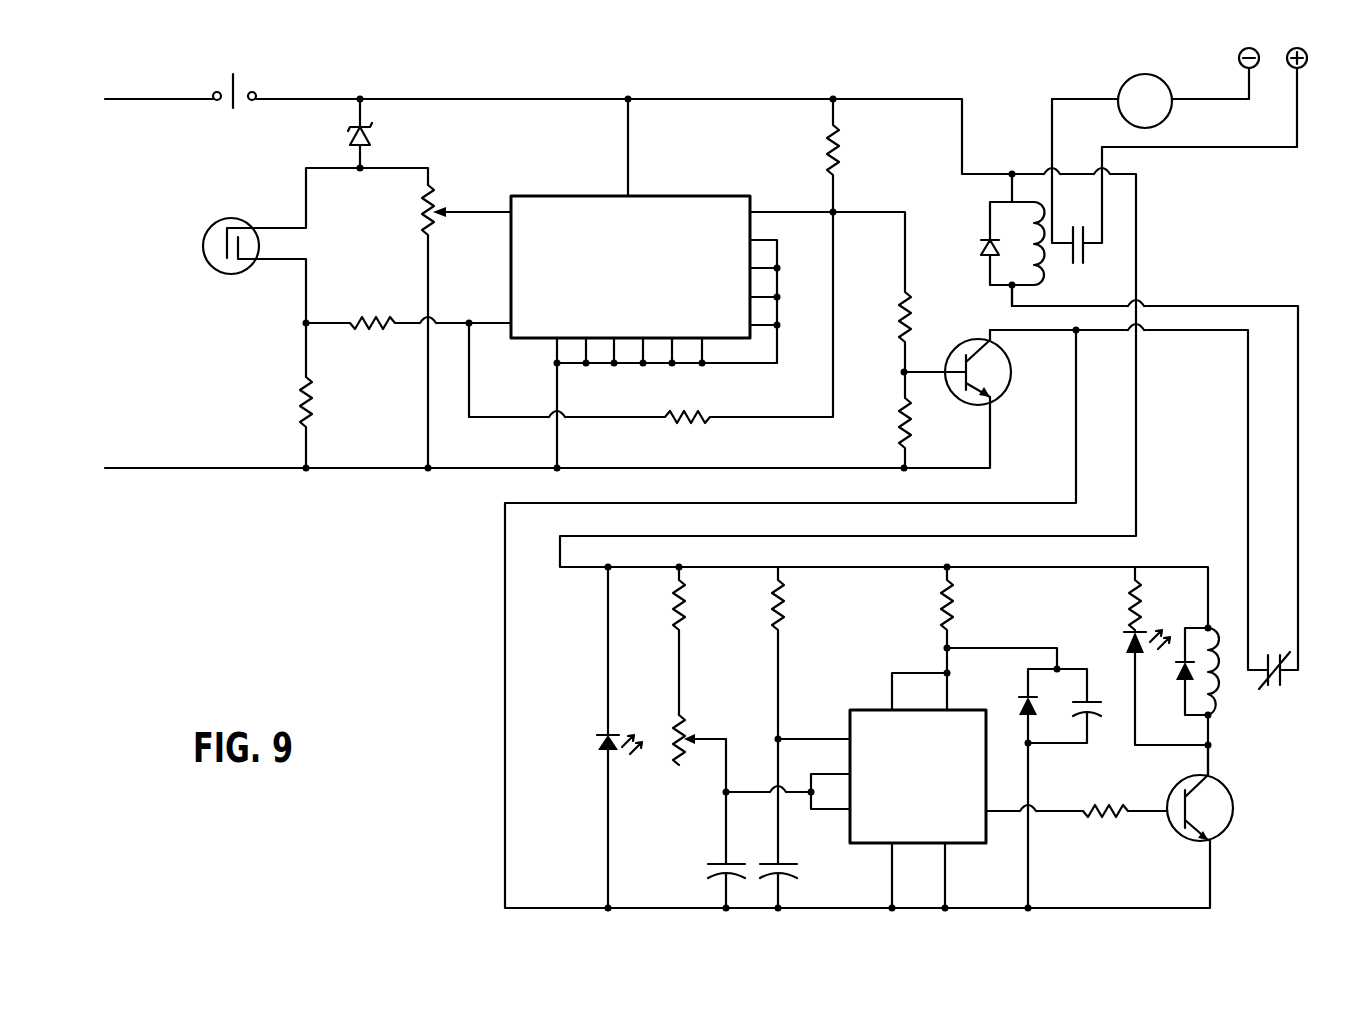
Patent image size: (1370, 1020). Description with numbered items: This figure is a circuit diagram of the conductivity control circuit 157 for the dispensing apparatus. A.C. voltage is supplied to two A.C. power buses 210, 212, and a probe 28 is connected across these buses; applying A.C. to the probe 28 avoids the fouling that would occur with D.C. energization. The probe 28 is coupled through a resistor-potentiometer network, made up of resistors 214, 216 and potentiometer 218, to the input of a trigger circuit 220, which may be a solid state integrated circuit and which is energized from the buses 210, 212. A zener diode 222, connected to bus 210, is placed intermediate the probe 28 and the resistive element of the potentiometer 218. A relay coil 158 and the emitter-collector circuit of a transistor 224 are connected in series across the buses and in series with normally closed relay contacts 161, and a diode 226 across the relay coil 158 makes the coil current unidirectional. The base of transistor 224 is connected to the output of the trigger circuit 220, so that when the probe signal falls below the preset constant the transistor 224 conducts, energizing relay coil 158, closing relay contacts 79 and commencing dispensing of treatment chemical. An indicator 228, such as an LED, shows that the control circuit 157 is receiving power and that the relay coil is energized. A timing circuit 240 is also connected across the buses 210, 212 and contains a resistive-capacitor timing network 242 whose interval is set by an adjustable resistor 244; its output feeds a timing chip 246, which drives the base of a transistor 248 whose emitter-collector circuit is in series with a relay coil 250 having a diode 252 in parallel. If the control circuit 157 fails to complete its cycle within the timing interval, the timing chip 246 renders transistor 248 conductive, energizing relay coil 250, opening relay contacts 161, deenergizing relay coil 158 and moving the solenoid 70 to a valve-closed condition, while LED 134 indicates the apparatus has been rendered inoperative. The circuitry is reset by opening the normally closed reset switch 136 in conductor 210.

The A.C. power bus 210 is at (165, 97).
The reset switch 136 is at (242, 107).
The zener diode 222 is at (372, 130).
The probe 28 is at (222, 218).
The potentiometer 218 is at (424, 222).
The resistor 216 is at (384, 318).
The resistor 214 is at (271, 395).
The A.C. power bus 212 is at (170, 470).
The conductivity control circuit 157 is at (568, 154).
The trigger circuit 220 is at (654, 196).
The transistor 224 is at (1002, 396).
The diode 226 is at (984, 242).
The relay coil 158 is at (1009, 240).
The relay contacts 79 is at (1091, 206).
The solenoid 70 is at (1136, 76).
The relay contacts 161 is at (1278, 649).
The timing circuit 240 is at (882, 629).
The resistive-capacitor timing network 242 is at (751, 676).
The indicator 228 is at (592, 739).
The adjustable resistor 244 is at (672, 745).
The timing chip 246 is at (881, 848).
The LED 134 is at (1127, 640).
The diode 252 is at (1178, 669).
The relay coil 250 is at (1221, 701).
The transistor 248 is at (1233, 784).